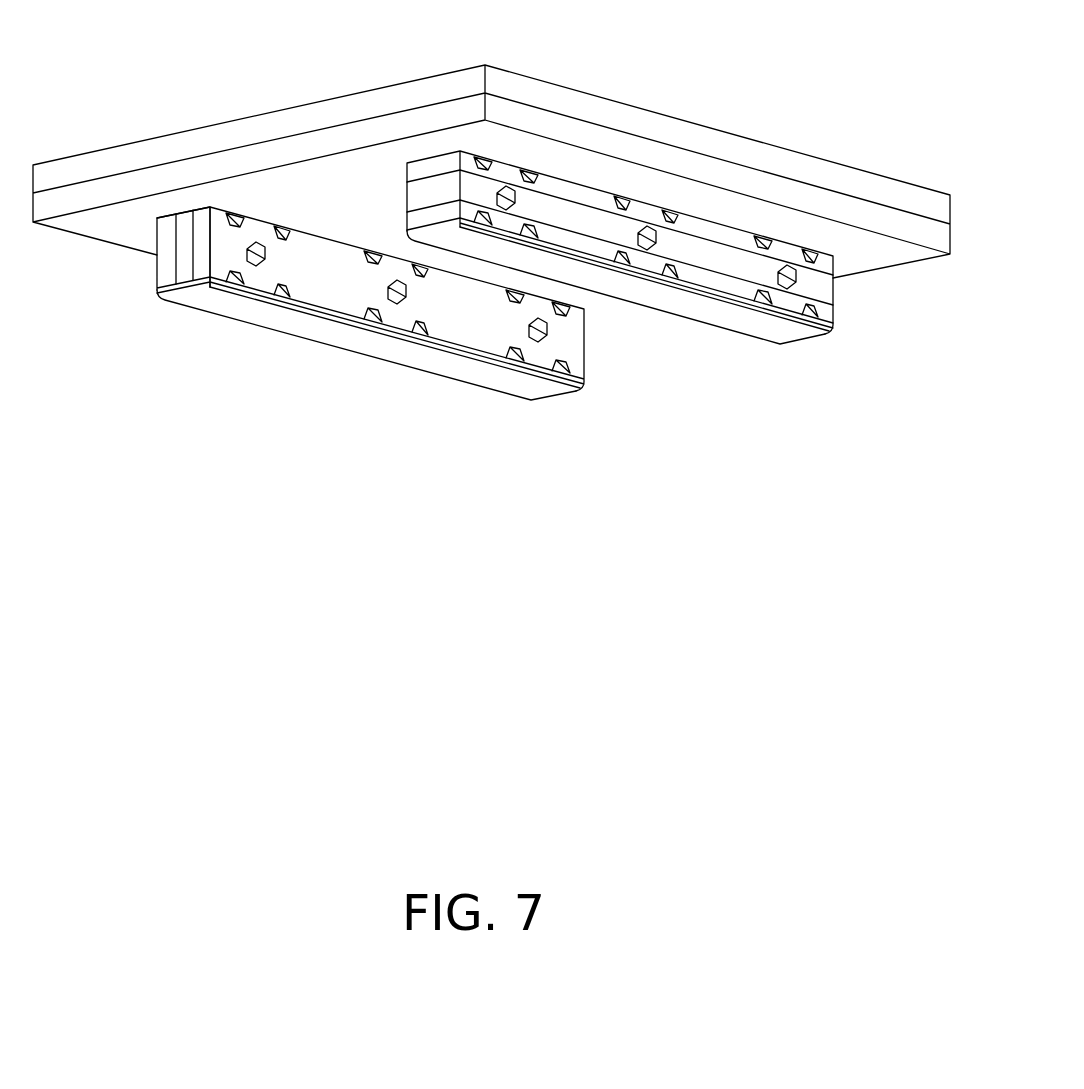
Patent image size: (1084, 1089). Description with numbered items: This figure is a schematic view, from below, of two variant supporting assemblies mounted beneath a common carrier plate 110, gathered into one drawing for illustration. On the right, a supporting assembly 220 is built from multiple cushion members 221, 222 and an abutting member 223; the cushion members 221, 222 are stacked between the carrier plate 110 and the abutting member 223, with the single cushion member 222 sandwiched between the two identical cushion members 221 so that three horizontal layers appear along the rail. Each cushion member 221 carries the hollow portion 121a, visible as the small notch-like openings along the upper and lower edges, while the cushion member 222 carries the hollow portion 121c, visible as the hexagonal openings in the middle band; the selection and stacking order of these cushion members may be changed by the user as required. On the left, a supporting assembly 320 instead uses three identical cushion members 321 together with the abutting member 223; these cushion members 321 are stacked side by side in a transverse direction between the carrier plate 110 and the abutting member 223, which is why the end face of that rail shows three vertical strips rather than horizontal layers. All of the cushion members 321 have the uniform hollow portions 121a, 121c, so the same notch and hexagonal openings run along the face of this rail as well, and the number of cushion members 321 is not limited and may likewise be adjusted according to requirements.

The carrier plate 110 is at (253, 147).
The hollow portion 121a is at (300, 235).
The hollow portion 121c is at (272, 264).
The supporting assembly 220 is at (751, 471).
The cushion member 221 is at (828, 312).
The cushion member 222 is at (823, 290).
The abutting member 223 is at (383, 352).
The supporting assembly 320 is at (330, 387).
The cushion member 321 is at (143, 254).